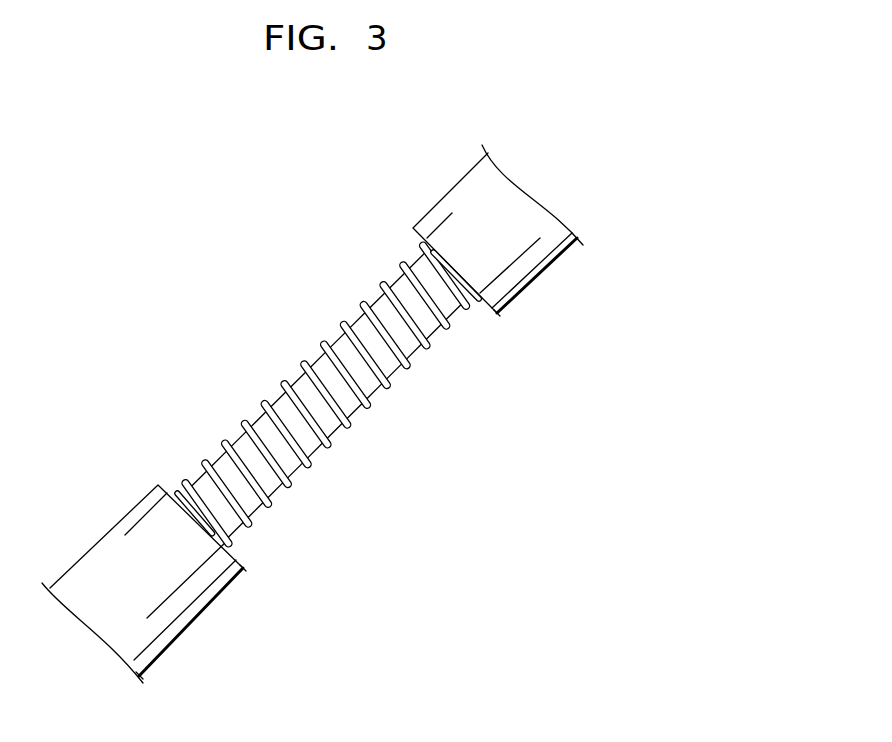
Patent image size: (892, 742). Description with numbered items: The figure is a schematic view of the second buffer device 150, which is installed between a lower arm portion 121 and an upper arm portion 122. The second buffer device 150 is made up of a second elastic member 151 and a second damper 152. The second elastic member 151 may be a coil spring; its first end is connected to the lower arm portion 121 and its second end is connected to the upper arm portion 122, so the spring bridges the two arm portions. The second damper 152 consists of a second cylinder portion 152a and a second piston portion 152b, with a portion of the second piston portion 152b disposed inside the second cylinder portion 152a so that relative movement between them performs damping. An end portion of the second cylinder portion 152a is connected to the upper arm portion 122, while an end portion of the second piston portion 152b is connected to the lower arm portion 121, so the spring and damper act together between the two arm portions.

The lower arm portion 121 is at (187, 612).
The upper arm portion 122 is at (515, 270).
The second buffer device 150 is at (328, 446).
The second elastic member 151 is at (461, 536).
The second damper 152 is at (326, 404).
The second cylinder portion 152a is at (372, 385).
The second piston portion 152b is at (455, 460).